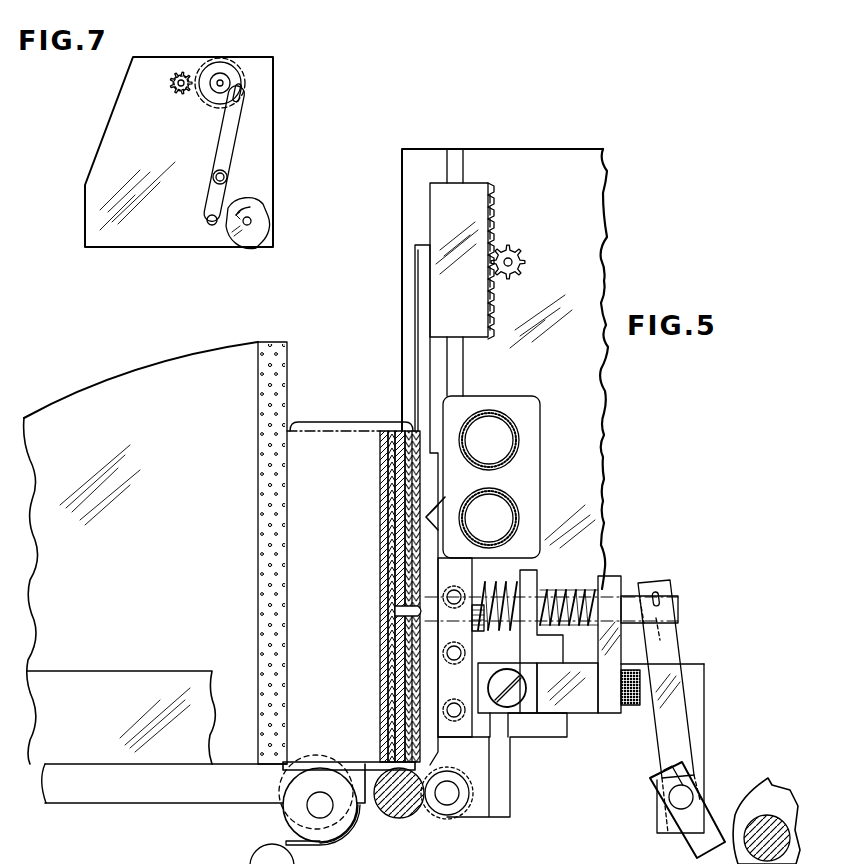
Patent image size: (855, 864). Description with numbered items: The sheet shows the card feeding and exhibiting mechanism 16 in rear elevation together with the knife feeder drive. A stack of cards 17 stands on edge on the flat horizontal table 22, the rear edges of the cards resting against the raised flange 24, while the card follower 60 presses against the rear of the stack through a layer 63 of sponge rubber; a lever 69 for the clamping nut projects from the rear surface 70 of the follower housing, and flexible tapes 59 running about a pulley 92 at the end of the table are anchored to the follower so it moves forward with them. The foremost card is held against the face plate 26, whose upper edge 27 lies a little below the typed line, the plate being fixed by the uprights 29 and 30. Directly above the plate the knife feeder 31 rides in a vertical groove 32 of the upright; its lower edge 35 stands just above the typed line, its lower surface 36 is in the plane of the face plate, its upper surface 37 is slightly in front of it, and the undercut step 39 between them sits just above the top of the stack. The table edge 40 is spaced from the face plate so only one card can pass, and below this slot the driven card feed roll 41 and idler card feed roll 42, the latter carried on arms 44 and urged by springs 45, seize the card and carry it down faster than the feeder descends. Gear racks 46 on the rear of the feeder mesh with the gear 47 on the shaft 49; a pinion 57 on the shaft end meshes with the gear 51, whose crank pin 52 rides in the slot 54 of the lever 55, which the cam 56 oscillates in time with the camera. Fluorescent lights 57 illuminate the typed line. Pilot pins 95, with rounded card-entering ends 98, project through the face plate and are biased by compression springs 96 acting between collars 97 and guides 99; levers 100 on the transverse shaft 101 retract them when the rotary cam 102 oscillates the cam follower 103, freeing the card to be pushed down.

In FIG. 5, the card feeding and exhibiting mechanism 16 is at (392, 243).
In FIG. 5, the cards 17 is at (345, 420).
In FIG. 5, the table 22 is at (258, 764).
In FIG. 5, the raised flange 24 is at (66, 718).
In FIG. 5, the face plate 26 is at (395, 656).
In FIG. 5, the upper edge 27 is at (445, 512).
In FIG. 5, the upright 29 is at (598, 178).
In FIG. 7, the upright 30 is at (265, 62).
In FIG. 5, the knife feeder 31 is at (413, 268).
In FIG. 5, the vertical groove 32 is at (447, 150).
In FIG. 5, the lower edge 35 is at (416, 465).
In FIG. 5, the lower surface 36 is at (410, 450).
In FIG. 5, the upper surface 37 is at (415, 313).
In FIG. 5, the step 39 is at (395, 438).
In FIG. 5, the table edge 40 is at (410, 816).
In FIG. 5, the card feed roll 41 is at (392, 816).
In FIG. 5, the card feed roll 42 is at (437, 815).
In FIG. 5, the arms 44 is at (500, 786).
In FIG. 5, the springs 45 is at (510, 575).
In FIG. 5, the gear rack 46 is at (488, 186).
In FIG. 5, the gear 47 is at (521, 250).
In FIG. 7, the shaft 49 is at (178, 72).
In FIG. 5, the shaft 49 is at (513, 262).
In FIG. 7, the gear 51 is at (211, 62).
In FIG. 7, the crank pin 52 is at (240, 62).
In FIG. 7, the slot 54 is at (244, 97).
In FIG. 7, the lever 55 is at (232, 140).
In FIG. 7, the cam 56 is at (262, 190).
In FIG. 7, the lights 57 is at (183, 72).
In FIG. 5, the lights 57 is at (503, 470).
In FIG. 5, the flexible tapes 59 is at (345, 728).
In FIG. 5, the card follower 60 is at (205, 333).
In FIG. 5, the layer of sponge rubber 63 is at (272, 347).
In FIG. 5, the lever 69 is at (290, 854).
In FIG. 5, the rear surface 70 is at (68, 394).
In FIG. 5, the pulley 92 is at (285, 813).
In FIG. 5, the pilot pin 95 is at (632, 606).
In FIG. 5, the compression spring 96 is at (560, 592).
In FIG. 5, the collar 97 is at (486, 636).
In FIG. 5, the card-entering end 98 is at (395, 611).
In FIG. 5, the guide 99 is at (612, 582).
In FIG. 5, the lever 100 is at (680, 638).
In FIG. 5, the transverse shaft 101 is at (686, 795).
In FIG. 5, the rotary cam 102 is at (762, 800).
In FIG. 5, the cam follower 103 is at (692, 845).